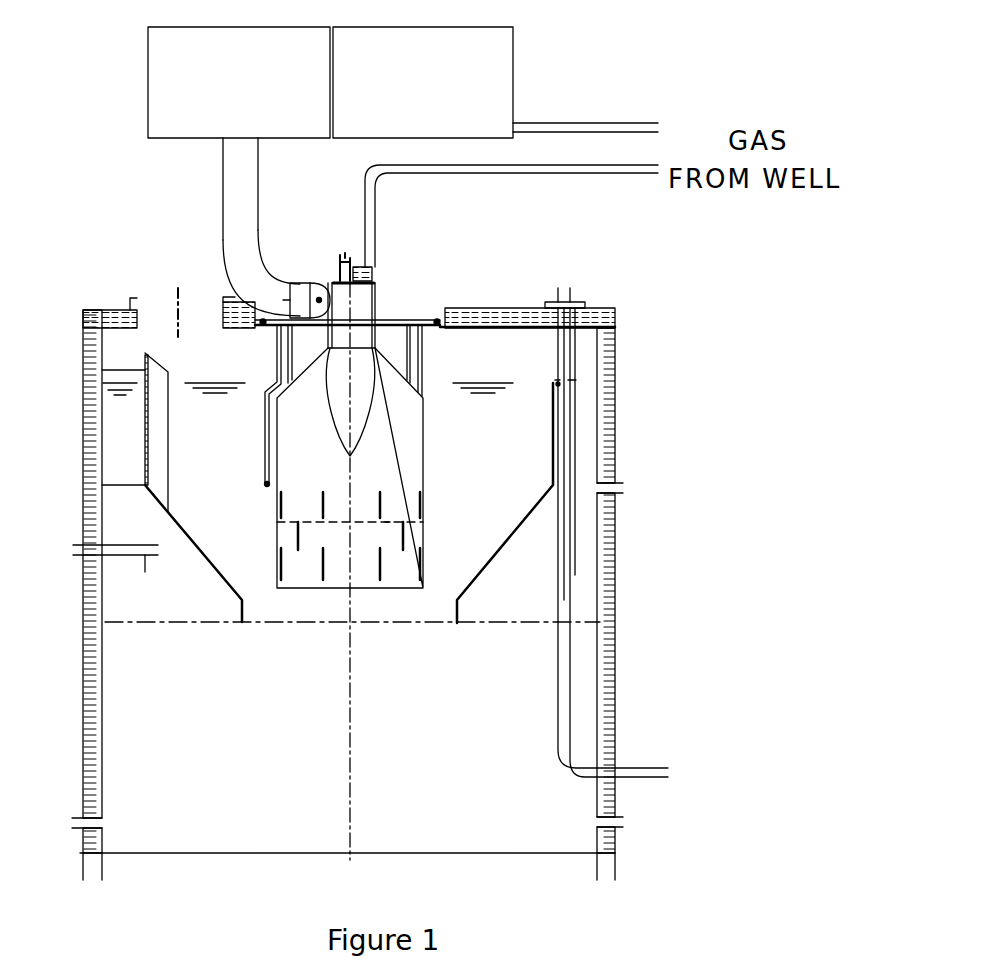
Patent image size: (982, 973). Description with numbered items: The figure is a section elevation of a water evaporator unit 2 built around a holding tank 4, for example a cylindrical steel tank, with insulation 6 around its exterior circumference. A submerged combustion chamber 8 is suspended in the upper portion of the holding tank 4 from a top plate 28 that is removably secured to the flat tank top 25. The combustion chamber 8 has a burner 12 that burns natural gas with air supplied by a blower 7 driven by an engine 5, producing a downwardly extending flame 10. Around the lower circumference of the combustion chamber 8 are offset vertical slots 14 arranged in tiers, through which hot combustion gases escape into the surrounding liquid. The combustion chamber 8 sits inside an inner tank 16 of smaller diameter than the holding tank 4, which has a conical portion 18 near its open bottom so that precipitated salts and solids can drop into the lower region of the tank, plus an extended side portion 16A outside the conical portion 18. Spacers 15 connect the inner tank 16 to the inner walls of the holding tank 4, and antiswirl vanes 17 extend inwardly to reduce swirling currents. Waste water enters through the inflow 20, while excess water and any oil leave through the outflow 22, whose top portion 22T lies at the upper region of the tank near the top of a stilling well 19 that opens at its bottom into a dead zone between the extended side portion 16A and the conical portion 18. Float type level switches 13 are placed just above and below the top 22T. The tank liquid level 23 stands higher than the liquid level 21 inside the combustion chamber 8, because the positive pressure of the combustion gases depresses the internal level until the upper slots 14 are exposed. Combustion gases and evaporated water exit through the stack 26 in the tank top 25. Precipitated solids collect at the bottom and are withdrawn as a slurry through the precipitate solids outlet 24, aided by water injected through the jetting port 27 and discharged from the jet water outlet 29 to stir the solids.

The water evaporator unit 2 is at (640, 572).
The holding tank 4 is at (102, 716).
The engine 5 is at (517, 57).
The insulation 6 is at (620, 680).
The blower 7 is at (148, 73).
The submerged combustion chamber 8 is at (423, 468).
The flame 10 is at (328, 405).
The burner 12 is at (333, 297).
The float type level switches 13 is at (592, 382).
The vertical slots 14 is at (405, 532).
The spacers 15 is at (118, 405).
The inner tank 16 is at (148, 420).
The extended side portion 16A is at (143, 563).
The antiswirl vanes 17 is at (155, 453).
The conical portion 18 is at (212, 572).
The stilling well 19 is at (545, 443).
The inflow 20 is at (75, 542).
The liquid level 21 is at (388, 520).
The outflow 22 is at (640, 768).
The top portion of the outflow 22T is at (557, 388).
The liquid level 23 is at (485, 383).
The precipitate solids outlet 24 is at (75, 828).
The tank top 25 is at (524, 327).
The stack 26 is at (155, 288).
The jetting port 27 is at (617, 827).
The top plate 28 is at (422, 322).
The jet water outlet 29 is at (618, 483).